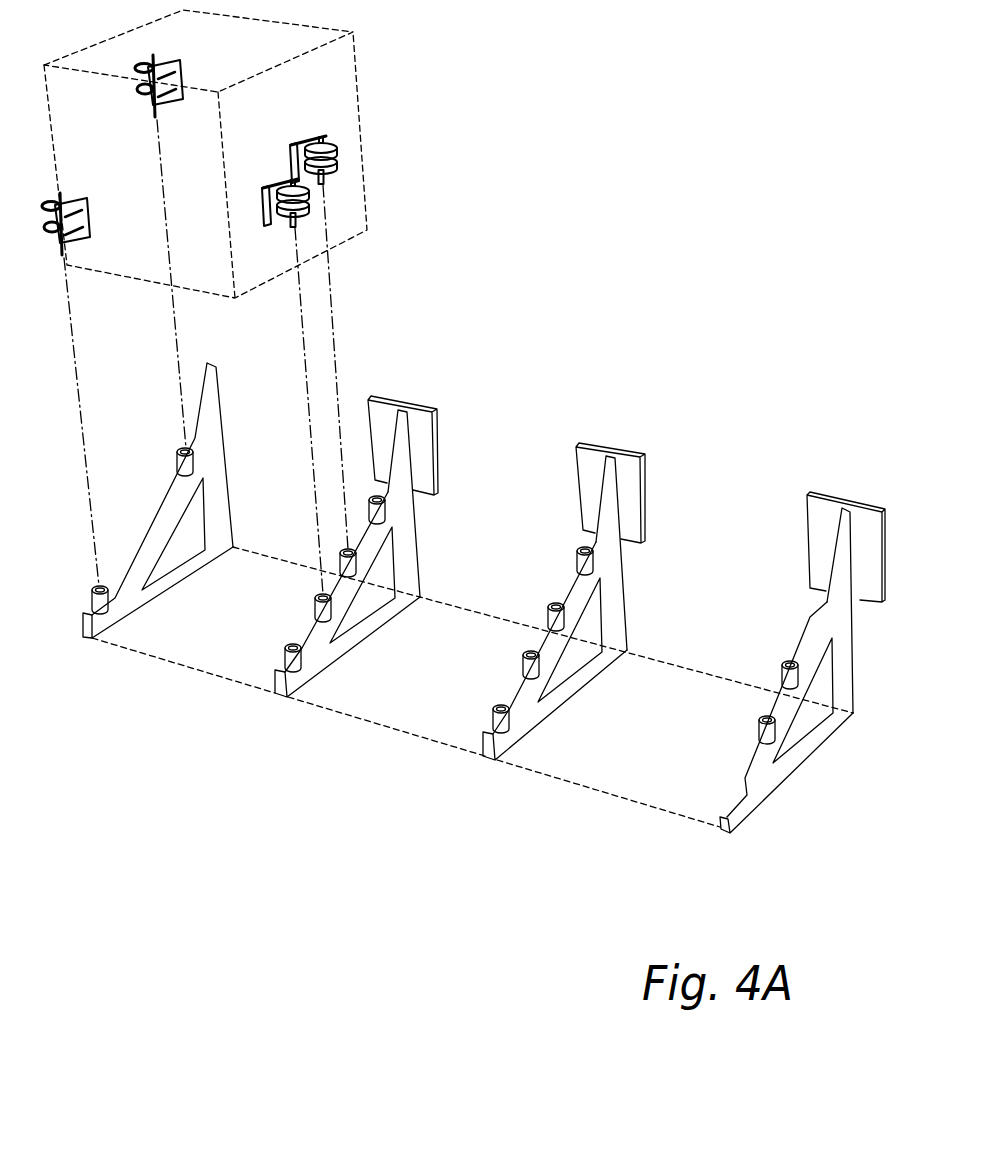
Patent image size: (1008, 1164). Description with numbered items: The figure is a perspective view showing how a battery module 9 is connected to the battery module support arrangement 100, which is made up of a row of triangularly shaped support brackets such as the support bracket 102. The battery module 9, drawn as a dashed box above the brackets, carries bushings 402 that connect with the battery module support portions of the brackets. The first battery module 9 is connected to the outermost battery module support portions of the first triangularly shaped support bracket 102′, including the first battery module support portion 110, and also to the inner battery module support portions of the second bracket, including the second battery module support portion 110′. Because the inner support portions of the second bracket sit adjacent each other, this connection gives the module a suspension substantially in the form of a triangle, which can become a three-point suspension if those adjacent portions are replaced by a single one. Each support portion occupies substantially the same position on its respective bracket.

The battery module 9 is at (358, 97).
The bushings 402 is at (332, 173).
The battery module support arrangement 100 is at (457, 598).
The triangularly shaped support bracket 102 is at (617, 603).
The first triangularly shaped support bracket 102′ is at (125, 546).
The first battery module support portion 110 is at (98, 590).
The second battery module support portion 110′ is at (332, 607).